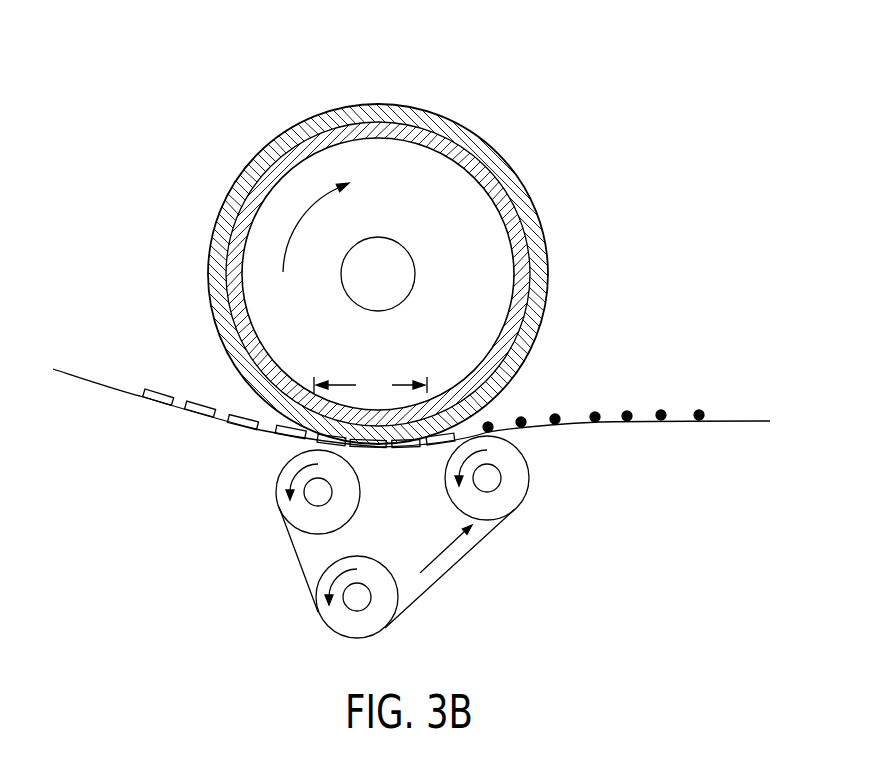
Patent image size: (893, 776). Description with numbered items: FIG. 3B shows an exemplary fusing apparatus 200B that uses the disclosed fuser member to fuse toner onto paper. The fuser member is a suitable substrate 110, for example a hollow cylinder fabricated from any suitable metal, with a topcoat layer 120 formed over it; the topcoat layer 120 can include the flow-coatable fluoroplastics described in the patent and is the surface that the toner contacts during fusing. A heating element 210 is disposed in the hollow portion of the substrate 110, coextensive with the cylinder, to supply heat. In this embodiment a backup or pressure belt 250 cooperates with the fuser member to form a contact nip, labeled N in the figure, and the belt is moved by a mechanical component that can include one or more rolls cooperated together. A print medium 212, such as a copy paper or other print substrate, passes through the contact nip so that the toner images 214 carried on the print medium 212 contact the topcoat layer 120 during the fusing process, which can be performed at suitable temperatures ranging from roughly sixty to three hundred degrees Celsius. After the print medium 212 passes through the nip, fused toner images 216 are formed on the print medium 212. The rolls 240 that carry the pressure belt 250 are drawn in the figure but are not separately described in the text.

The fusing apparatus 200B is at (481, 92).
The topcoat layer 120 is at (267, 149).
The substrate 110 is at (372, 209).
The heating element 210 is at (402, 242).
The print medium 212 is at (706, 424).
The fused toner images 216 is at (152, 396).
The toner images 214 is at (699, 409).
The transfer roller assembly 240 is at (254, 486).
The backup (or pressure) belt 250 is at (412, 606).